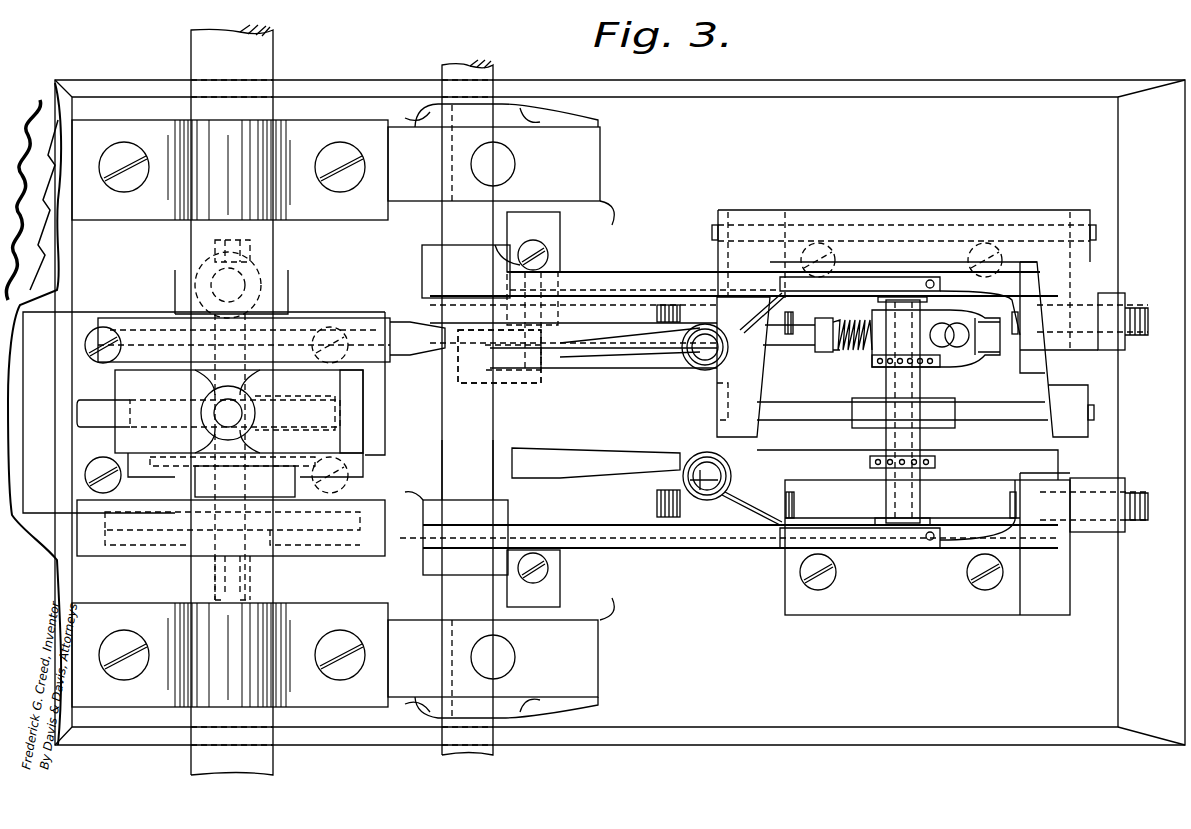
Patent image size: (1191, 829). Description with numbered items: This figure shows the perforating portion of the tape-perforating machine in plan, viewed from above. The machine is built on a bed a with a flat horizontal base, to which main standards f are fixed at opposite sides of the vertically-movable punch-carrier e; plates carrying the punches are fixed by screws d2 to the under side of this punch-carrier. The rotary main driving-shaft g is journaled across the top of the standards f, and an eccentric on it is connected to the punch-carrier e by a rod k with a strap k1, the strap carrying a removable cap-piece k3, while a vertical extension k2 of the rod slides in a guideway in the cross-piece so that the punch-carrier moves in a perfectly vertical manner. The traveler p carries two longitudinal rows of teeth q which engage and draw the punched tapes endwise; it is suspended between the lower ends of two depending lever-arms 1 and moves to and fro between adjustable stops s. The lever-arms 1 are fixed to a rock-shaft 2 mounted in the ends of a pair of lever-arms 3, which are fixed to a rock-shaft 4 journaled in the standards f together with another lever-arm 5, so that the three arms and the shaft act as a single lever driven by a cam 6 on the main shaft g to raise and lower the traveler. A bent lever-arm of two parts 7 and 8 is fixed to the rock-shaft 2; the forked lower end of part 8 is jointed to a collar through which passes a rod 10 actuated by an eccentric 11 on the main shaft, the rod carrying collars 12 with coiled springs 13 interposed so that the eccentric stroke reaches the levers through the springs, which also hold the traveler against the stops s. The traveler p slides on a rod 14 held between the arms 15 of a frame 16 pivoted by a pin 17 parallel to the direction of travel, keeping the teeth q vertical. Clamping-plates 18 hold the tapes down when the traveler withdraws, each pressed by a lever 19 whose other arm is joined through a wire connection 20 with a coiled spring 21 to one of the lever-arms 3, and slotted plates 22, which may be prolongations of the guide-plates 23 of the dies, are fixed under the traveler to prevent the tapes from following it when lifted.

The lever-arms 1 is at (935, 305).
The rock-shaft 2 is at (886, 490).
The lever-arms 3 is at (679, 280).
The rock-shaft 4 is at (470, 410).
The lever-arm 5 is at (254, 475).
The cam 6 is at (330, 545).
The lever-arm part 7 is at (936, 338).
The lever-arm part 8 is at (957, 347).
The rod 10 is at (621, 340).
The eccentric 11 is at (303, 318).
The collars 12 is at (822, 350).
The coiled springs 13 is at (850, 328).
The pin or rod 14 is at (1013, 412).
The arms 15 is at (718, 402).
The frame 16 is at (930, 225).
The pin 17 is at (1098, 233).
The clamping-plates 18 is at (518, 372).
The lever 19 is at (576, 352).
The wire connection 20 is at (718, 566).
The coiled spring 21 is at (692, 365).
The slotted plates 22 is at (735, 460).
The guide-plates 23 is at (410, 520).
The bed a is at (620, 412).
The punch-carrier e is at (80, 388).
The main standards f is at (494, 411).
The main driving-shaft g is at (205, 582).
The rod k is at (200, 415).
The strap k1 is at (124, 408).
The vertical extension k2 is at (252, 413).
The removable cap-piece k3 is at (362, 412).
The screws d2 is at (88, 350).
The traveler p is at (983, 359).
The teeth or pins q is at (880, 368).
The adjustable stops s is at (1012, 507).